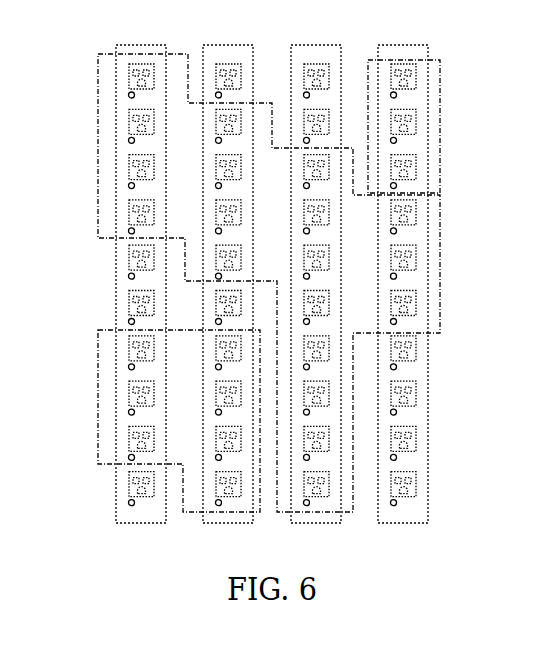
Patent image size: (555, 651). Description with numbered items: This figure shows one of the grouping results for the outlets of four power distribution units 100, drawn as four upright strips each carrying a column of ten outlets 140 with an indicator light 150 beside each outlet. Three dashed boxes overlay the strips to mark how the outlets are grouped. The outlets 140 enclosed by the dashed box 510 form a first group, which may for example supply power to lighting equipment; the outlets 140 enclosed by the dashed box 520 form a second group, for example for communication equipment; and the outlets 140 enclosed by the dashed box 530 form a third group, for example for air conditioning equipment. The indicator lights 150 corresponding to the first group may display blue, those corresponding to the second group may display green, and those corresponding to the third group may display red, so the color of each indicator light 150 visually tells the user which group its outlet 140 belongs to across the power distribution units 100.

The power distribution unit 100 is at (428, 88).
The outlet 140 is at (418, 262).
The indicator light 150 is at (396, 279).
The dashed box 510 is at (98, 171).
The dashed box 520 is at (98, 389).
The dashed box 530 is at (440, 150).